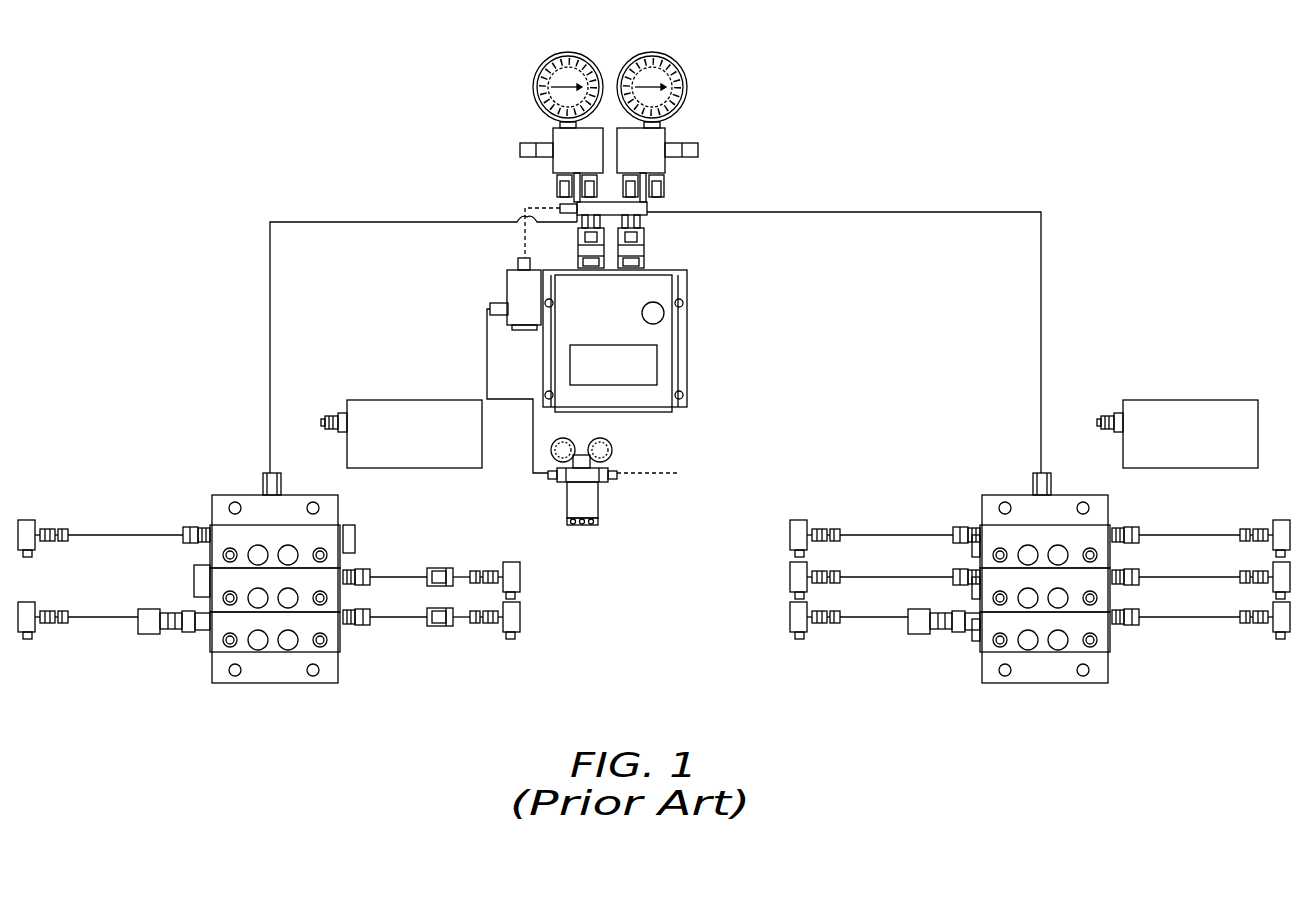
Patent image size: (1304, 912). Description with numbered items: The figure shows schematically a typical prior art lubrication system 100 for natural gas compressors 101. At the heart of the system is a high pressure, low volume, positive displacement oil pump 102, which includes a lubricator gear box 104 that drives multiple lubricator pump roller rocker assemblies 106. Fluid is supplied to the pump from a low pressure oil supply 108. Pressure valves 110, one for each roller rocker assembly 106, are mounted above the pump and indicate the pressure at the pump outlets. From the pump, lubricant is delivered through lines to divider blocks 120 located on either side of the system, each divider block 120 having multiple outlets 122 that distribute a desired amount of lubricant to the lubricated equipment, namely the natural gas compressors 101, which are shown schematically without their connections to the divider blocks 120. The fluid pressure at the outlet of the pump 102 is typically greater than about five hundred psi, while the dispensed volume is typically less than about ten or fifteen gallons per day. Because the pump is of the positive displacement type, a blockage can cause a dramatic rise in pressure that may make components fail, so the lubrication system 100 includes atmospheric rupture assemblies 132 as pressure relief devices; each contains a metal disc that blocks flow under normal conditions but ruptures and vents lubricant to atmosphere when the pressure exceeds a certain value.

The lubrication system 100 is at (980, 82).
The natural gas compressor 101 is at (390, 400).
The positive displacement oil pump 102 is at (720, 284).
The lubricator gear box 104 is at (690, 349).
The lubricator pump roller rocker assembly 106 is at (575, 256).
The low pressure oil supply 108 is at (638, 473).
The pressure valve 110 is at (548, 63).
The divider block 120 is at (340, 506).
The outlet 122 is at (348, 569).
The atmospheric rupture assembly 132 is at (555, 192).